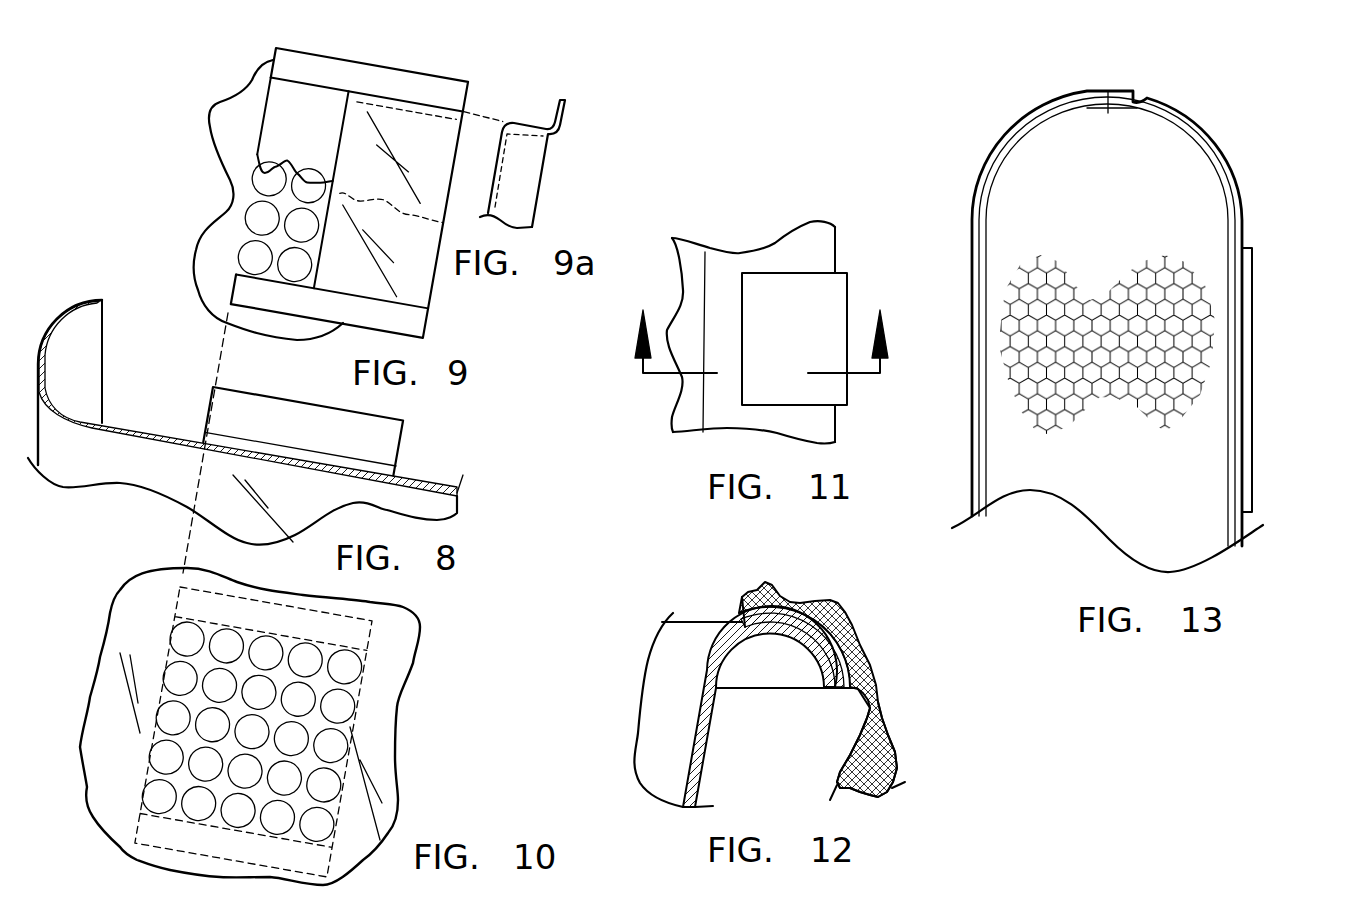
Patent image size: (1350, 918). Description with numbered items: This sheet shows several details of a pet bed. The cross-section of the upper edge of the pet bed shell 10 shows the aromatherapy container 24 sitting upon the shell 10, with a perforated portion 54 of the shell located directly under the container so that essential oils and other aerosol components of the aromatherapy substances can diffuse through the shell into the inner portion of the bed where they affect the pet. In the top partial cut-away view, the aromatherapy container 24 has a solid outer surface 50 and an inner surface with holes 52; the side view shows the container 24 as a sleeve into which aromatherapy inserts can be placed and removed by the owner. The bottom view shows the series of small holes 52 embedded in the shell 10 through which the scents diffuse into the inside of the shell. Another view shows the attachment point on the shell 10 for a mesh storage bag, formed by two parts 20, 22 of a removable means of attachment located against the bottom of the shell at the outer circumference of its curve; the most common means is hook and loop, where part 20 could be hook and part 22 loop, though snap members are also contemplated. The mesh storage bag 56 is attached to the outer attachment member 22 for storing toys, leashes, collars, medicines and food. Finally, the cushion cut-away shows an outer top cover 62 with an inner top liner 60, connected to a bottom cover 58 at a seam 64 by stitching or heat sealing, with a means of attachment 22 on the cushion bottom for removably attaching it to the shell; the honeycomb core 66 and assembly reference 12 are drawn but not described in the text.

In FIG. 8, the pet bed shell 10 is at (73, 467).
In FIG. 10, the pet bed shell 10 is at (390, 653).
In FIG. 11, the pet bed shell 10 is at (810, 245).
In FIG. 12, the pet bed shell 10 is at (670, 680).
In FIG. 11, the sealed assembly 12 is at (761, 321).
In FIG. 13, the sealed assembly 12 is at (1119, 292).
In FIG. 11, the attachment member 20 is at (794, 339).
In FIG. 12, the attachment member 20 is at (793, 608).
In FIG. 11, the outer attachment member 22 is at (768, 336).
In FIG. 12, the outer attachment member 22 is at (747, 603).
In FIG. 13, the outer attachment member 22 is at (1252, 283).
In FIG. 9, the aromatherapy container 24 is at (430, 93).
In FIG. 9A, the aromatherapy container 24 is at (518, 190).
In FIG. 8, the aromatherapy container 24 is at (383, 453).
In FIG. 9, the outer surface 50 is at (288, 139).
In FIG. 9, the holes 52 is at (238, 255).
In FIG. 10, the holes 52 is at (187, 638).
In FIG. 8, the perforated portion 54 is at (233, 445).
In FIG. 12, the mesh storage bag 56 is at (893, 745).
In FIG. 13, the bottom cover 58 is at (1232, 168).
In FIG. 13, the inner top liner 60 is at (988, 168).
In FIG. 13, the outer top cover 62 is at (1040, 107).
In FIG. 13, the seam 64 is at (1110, 90).
In FIG. 13, the honeycomb core 66 is at (1096, 250).